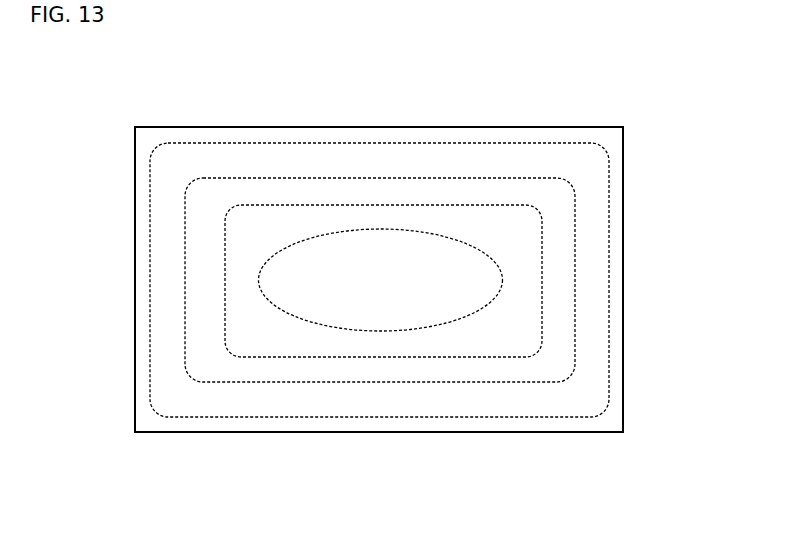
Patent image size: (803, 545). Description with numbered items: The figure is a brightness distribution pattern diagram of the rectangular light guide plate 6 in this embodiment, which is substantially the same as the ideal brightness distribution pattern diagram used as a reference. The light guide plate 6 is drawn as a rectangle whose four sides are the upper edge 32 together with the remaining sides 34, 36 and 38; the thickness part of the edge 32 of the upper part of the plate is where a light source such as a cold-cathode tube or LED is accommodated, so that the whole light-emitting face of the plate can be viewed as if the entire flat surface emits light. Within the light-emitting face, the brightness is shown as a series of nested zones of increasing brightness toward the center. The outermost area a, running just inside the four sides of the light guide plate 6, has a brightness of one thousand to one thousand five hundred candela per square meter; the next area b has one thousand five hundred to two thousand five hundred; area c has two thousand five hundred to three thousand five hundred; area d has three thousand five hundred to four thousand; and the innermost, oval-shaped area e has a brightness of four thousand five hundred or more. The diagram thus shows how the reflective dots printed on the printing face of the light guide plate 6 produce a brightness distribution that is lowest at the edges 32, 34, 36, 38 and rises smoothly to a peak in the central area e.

The light guide plate 6 is at (623, 394).
The edge 32 is at (258, 128).
The second side 34 is at (390, 432).
The third side 36 is at (138, 312).
The fourth side 38 is at (623, 297).
The area a is at (610, 142).
The area b is at (563, 168).
The area c is at (515, 195).
The area d is at (455, 218).
The area e is at (382, 263).